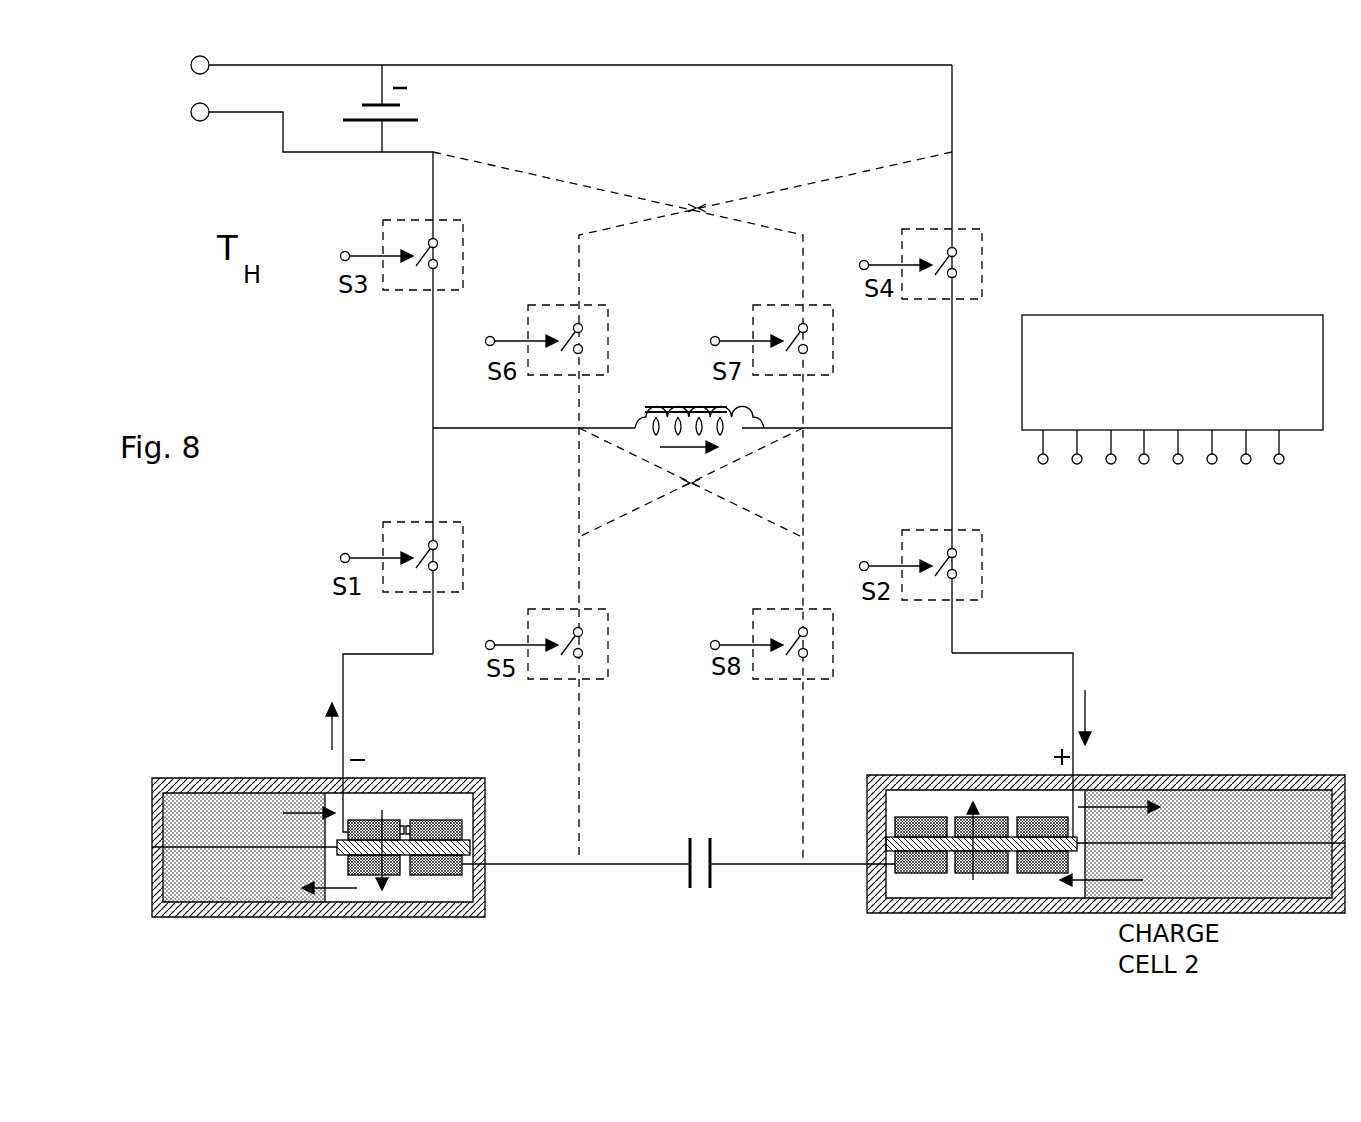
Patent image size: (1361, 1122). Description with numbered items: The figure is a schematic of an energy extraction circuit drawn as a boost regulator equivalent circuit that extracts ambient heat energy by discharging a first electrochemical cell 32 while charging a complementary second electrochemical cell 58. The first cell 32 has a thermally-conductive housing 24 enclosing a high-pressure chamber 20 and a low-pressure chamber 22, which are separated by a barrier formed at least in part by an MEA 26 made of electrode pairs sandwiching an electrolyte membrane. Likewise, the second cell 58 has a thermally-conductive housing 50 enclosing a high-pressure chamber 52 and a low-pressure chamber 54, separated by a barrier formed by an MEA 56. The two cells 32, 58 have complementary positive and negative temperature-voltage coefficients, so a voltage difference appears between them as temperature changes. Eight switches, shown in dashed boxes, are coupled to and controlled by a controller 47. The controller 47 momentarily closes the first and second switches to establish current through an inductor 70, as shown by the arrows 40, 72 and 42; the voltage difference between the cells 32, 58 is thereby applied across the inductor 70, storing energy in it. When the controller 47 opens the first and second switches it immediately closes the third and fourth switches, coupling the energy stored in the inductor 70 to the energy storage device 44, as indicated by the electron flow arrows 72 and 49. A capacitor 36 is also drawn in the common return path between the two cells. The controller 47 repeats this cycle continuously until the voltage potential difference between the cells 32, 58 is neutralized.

The high-pressure chamber 20 is at (335, 841).
The low-pressure chamber 22 is at (180, 917).
The thermally-conductive housing 24 is at (272, 783).
The MEA 26 is at (443, 800).
The first electrochemical cell 32 is at (487, 798).
The capacitor 36 is at (692, 872).
The current flow arrow 40 is at (340, 717).
The current flow arrow 42 is at (1087, 723).
The energy storage device 44 is at (370, 120).
The controller 47 is at (1193, 312).
The electron flow direction arrow 49 is at (505, 78).
The thermally-conductive housing 50 is at (980, 777).
The high-pressure chamber 52 is at (1295, 817).
The low-pressure chamber 54 is at (1295, 873).
The MEA 56 is at (1043, 860).
The second electrochemical cell 58 is at (887, 777).
The inductor 70 is at (693, 403).
The current flow arrow 72 is at (680, 447).